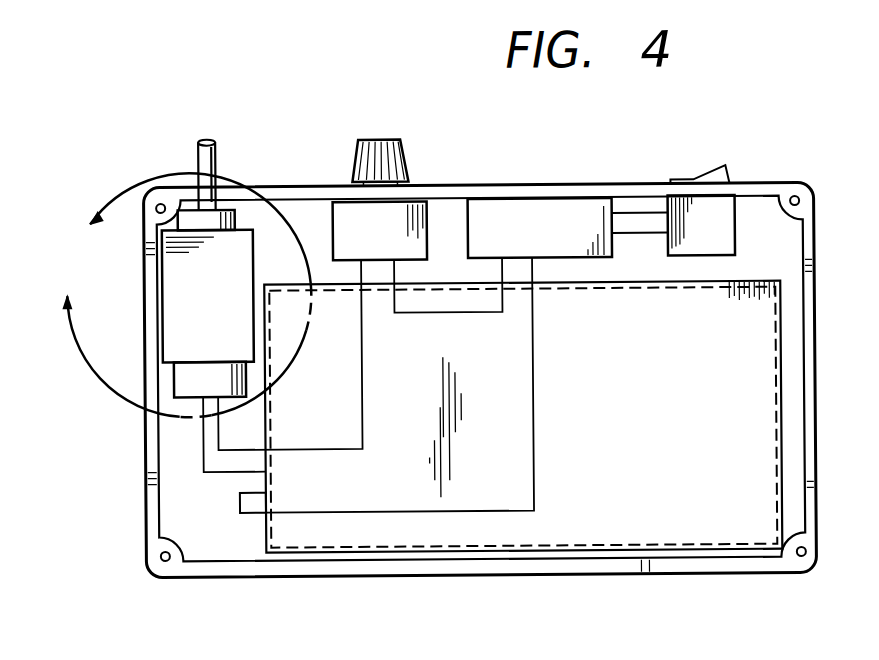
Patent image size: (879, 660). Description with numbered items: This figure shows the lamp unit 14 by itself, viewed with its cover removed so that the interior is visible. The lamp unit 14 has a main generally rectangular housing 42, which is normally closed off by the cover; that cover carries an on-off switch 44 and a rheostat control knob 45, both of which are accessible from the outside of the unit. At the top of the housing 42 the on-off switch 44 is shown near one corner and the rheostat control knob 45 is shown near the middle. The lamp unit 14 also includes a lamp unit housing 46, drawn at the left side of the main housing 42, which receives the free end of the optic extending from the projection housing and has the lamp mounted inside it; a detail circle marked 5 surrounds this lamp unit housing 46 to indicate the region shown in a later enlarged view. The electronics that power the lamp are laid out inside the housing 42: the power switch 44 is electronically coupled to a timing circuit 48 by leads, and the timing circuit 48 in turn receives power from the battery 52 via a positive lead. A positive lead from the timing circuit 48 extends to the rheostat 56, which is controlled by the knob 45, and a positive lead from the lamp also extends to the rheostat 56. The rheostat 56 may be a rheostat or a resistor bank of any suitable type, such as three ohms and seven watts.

The detail circle for FIG. 5 is at (186, 295).
The lamp unit 14 is at (298, 180).
The main generally rectangular housing 42 is at (518, 576).
The on-off switch 44 is at (688, 182).
The rheostat control knob 45 is at (379, 137).
The lamp unit housing 46 is at (214, 318).
The timing circuit 48 is at (524, 224).
The battery 52 is at (349, 531).
The rheostat 56 is at (398, 241).